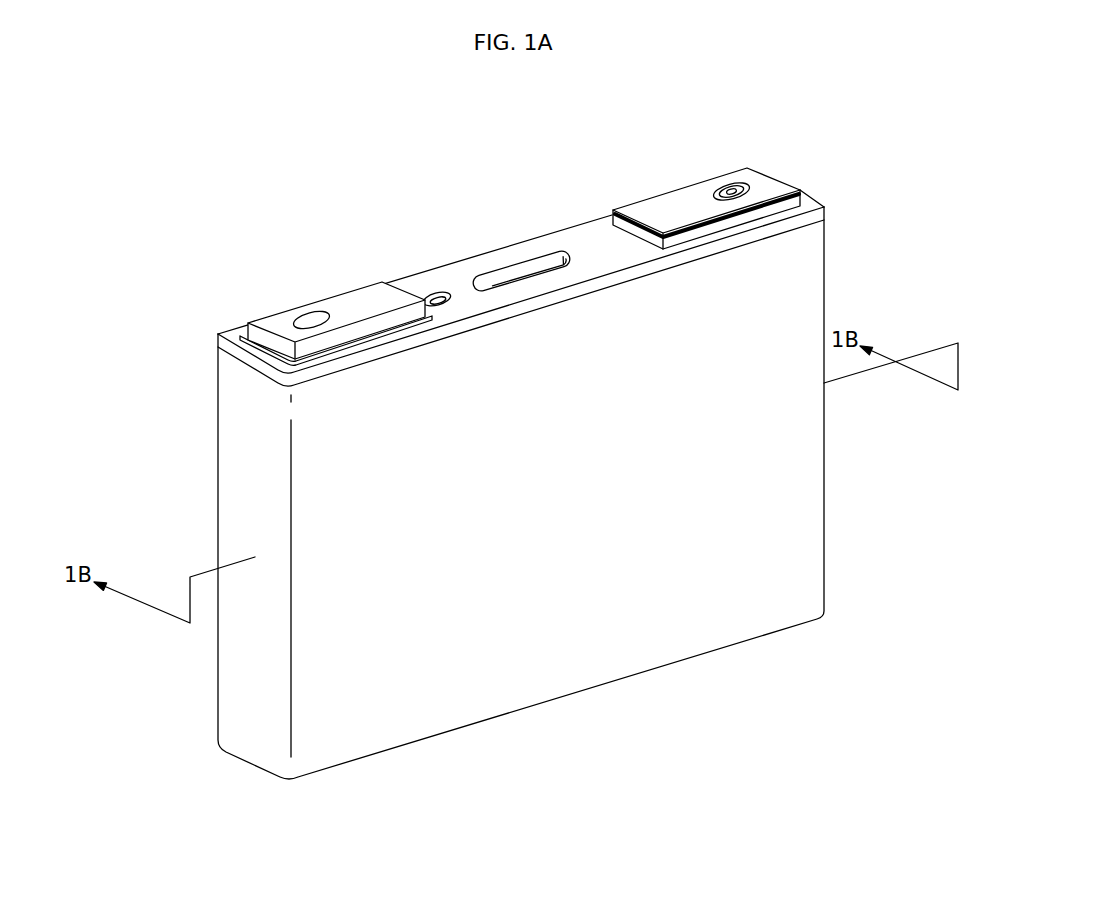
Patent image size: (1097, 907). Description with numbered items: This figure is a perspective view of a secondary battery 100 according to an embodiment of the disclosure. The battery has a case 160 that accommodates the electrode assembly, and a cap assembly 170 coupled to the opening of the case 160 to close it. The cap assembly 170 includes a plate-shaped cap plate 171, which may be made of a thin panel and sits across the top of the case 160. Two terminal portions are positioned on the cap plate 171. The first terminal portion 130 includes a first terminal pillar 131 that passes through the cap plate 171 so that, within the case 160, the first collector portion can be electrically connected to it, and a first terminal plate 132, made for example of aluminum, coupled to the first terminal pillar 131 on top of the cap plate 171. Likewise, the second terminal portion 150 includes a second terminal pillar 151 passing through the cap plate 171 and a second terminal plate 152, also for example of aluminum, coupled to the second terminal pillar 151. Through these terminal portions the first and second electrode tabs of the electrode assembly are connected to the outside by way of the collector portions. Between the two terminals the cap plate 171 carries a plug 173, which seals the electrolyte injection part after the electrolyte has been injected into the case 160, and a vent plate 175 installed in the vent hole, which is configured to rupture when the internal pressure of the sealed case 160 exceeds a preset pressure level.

The secondary battery 100 is at (142, 223).
The first terminal portion 130 is at (257, 222).
The first terminal pillar 131 is at (307, 313).
The first terminal plate 132 is at (350, 300).
The second terminal portion 150 is at (728, 108).
The second terminal pillar 151 is at (732, 188).
The second terminal plate 152 is at (672, 206).
The case 160 is at (595, 665).
The cap assembly 170 is at (580, 168).
The cap plate 171 is at (580, 242).
The plug 173 is at (437, 293).
The vent plate 175 is at (513, 277).